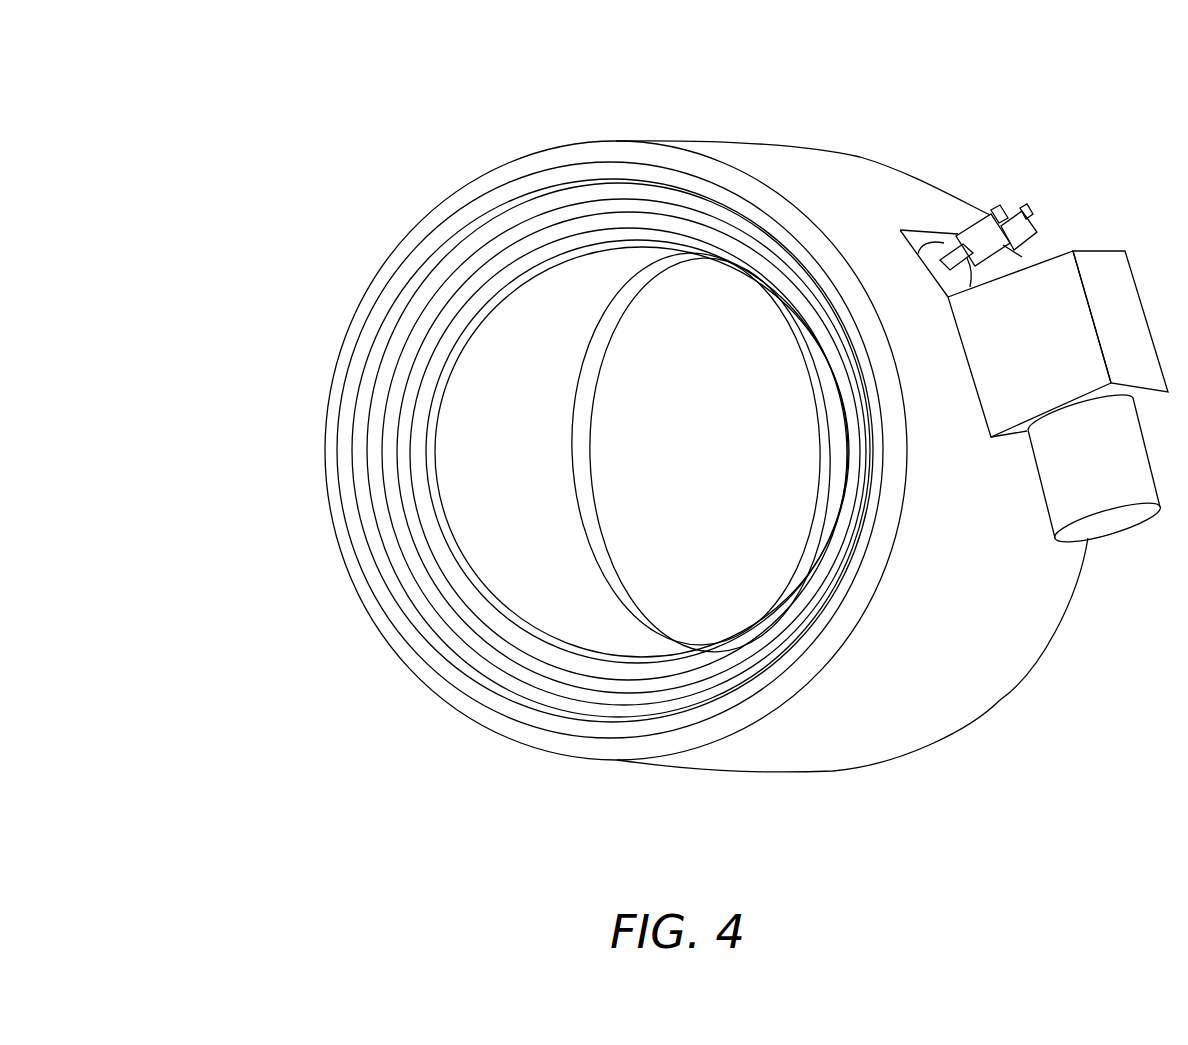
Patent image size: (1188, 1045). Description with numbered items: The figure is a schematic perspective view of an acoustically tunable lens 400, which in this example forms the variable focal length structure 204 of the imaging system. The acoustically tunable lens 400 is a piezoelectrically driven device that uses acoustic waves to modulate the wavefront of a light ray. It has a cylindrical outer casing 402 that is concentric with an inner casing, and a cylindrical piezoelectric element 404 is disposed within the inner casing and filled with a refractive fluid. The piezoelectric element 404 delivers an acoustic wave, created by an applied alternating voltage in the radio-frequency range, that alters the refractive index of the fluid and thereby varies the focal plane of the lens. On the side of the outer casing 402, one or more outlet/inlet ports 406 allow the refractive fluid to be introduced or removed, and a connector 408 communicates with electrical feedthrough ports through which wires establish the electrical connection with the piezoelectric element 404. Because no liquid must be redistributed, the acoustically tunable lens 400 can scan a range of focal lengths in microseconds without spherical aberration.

The variable focal length structure 204 is at (262, 80).
The acoustically tunable lens 400 is at (712, 108).
The outer casing 402 is at (973, 590).
The piezoelectric element 404 is at (520, 493).
The outlet/inlet ports 406 is at (995, 215).
The connector 408 is at (1055, 355).